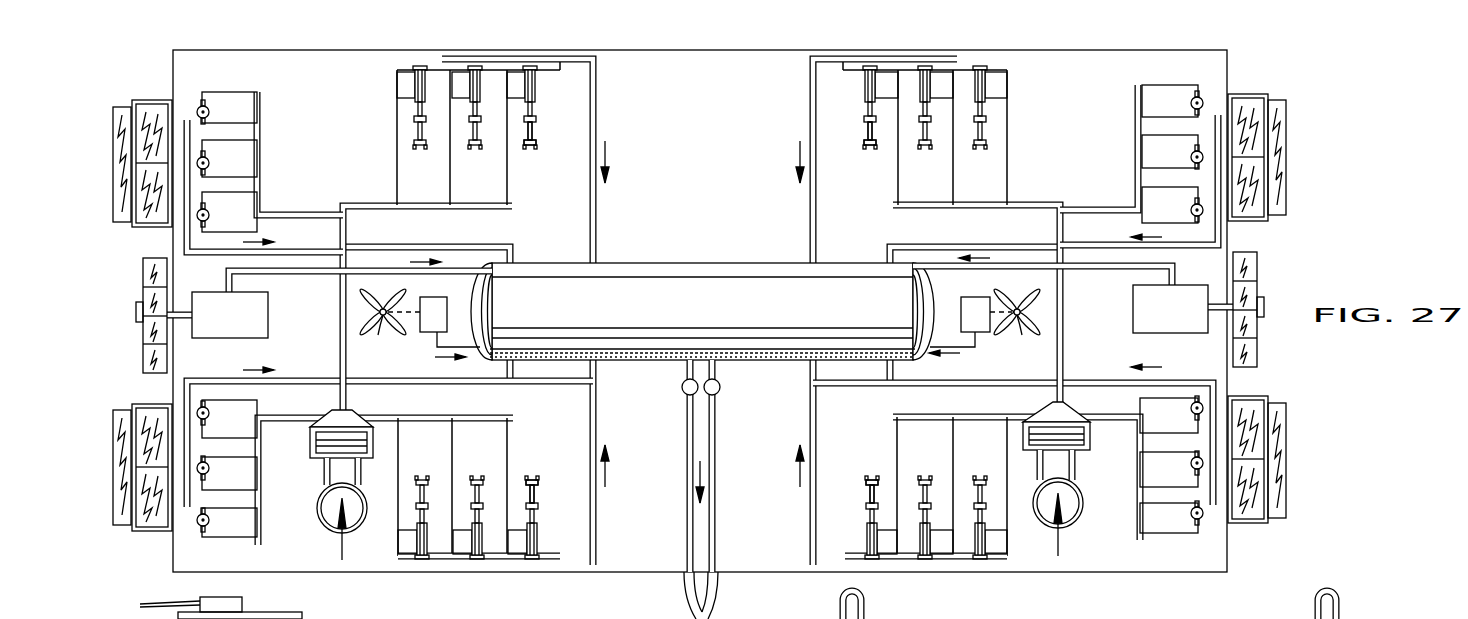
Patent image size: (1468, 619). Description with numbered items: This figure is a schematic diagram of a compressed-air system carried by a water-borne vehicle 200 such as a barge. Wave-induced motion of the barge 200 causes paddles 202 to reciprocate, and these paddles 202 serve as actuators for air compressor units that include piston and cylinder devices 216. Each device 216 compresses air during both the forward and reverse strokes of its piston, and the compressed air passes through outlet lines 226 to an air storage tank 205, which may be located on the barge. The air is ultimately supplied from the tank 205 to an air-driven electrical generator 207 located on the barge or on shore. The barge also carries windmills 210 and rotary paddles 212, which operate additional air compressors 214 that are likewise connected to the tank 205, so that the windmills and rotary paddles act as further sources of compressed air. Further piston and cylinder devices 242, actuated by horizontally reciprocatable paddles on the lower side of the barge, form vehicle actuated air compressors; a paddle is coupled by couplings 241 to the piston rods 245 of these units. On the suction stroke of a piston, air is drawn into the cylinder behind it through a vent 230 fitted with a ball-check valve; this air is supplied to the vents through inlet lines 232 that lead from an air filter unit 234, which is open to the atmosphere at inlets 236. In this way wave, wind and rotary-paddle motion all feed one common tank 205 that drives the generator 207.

The water-borne vehicle 200 is at (718, 116).
The paddle 202 is at (114, 196).
The air storage tank 205 is at (731, 316).
The air-driven electrical generator 207 is at (292, 616).
The windmill 210 is at (700, 327).
The rotary paddle 212 is at (143, 274).
The air compressor 214 is at (249, 324).
The piston and cylinder device 216 is at (209, 110).
The line 226 is at (405, 252).
The vent 230 is at (746, 489).
The line 232 is at (340, 300).
The air filter unit 234 is at (316, 442).
The inlet 236 is at (320, 500).
The coupling 241 is at (538, 148).
The piston and cylinder device 242 is at (1013, 556).
The piston rod 245 is at (537, 129).